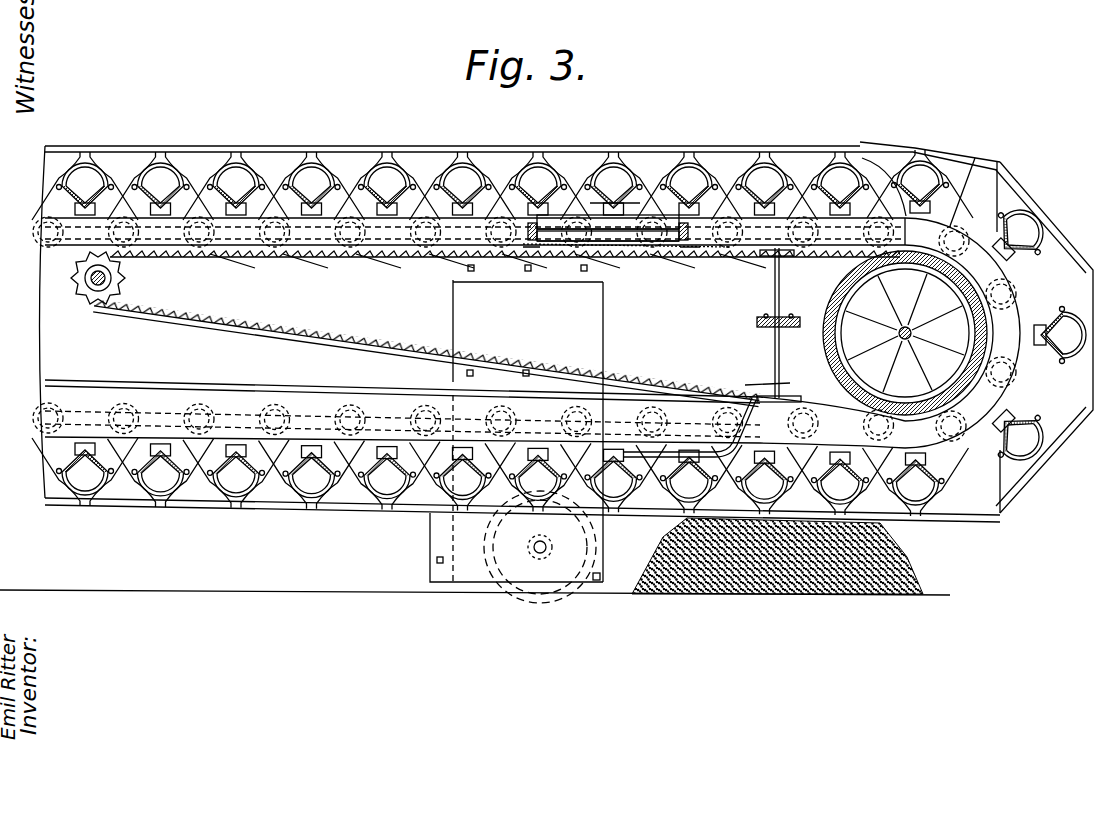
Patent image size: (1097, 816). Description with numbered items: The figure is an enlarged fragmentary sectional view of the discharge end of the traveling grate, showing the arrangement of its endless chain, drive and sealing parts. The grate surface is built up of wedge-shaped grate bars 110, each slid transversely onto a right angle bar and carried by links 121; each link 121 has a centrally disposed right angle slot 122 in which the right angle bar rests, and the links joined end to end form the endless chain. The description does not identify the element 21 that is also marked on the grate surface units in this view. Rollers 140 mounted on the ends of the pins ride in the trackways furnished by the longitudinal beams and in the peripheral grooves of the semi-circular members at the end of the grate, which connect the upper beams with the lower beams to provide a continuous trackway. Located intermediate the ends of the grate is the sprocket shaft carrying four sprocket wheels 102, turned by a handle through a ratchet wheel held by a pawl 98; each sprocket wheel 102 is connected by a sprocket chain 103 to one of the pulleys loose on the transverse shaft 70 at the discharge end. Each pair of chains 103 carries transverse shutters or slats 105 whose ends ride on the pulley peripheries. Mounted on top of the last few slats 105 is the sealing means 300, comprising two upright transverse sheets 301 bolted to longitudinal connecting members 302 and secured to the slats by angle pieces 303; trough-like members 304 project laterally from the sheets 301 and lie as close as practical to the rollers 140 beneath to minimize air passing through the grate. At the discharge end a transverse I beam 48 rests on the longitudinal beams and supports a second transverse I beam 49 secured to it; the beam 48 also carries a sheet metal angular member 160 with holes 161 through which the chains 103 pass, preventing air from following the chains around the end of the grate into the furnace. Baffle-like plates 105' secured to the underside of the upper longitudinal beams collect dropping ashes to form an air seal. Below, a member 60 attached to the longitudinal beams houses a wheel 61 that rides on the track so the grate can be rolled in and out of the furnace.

The grate bar 110 is at (270, 146).
The right angle slot 122 is at (372, 228).
The upper cup 21 is at (463, 226).
The link 121 is at (372, 455).
The roller 140 is at (277, 224).
The transverse slat 105 is at (670, 271).
The baffle-like plate 105' is at (378, 271).
The sprocket wheel 102 is at (120, 288).
The pawl 98 is at (112, 275).
The sprocket chain 103 is at (352, 340).
The sealing means 300 is at (576, 202).
The upright transverse sheet 301 is at (560, 244).
The longitudinal connecting member 302 is at (640, 229).
The angle piece 303 is at (527, 247).
The trough-like member 304 is at (610, 203).
The transverse I beam 48 is at (774, 352).
The transverse I beam 49 is at (773, 298).
The transverse shaft 70 is at (898, 333).
The angular member 160 is at (680, 452).
The hole 161 is at (748, 385).
The member 60 is at (440, 572).
The wheel 61 is at (542, 597).